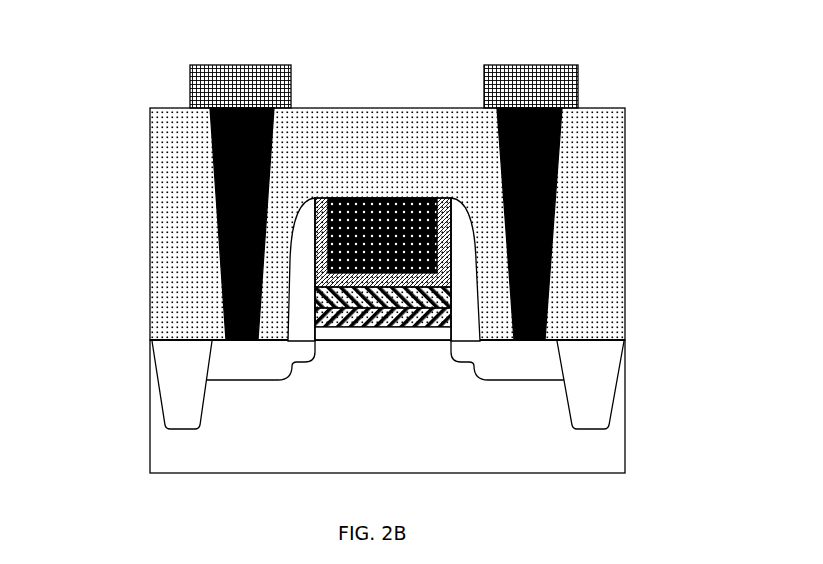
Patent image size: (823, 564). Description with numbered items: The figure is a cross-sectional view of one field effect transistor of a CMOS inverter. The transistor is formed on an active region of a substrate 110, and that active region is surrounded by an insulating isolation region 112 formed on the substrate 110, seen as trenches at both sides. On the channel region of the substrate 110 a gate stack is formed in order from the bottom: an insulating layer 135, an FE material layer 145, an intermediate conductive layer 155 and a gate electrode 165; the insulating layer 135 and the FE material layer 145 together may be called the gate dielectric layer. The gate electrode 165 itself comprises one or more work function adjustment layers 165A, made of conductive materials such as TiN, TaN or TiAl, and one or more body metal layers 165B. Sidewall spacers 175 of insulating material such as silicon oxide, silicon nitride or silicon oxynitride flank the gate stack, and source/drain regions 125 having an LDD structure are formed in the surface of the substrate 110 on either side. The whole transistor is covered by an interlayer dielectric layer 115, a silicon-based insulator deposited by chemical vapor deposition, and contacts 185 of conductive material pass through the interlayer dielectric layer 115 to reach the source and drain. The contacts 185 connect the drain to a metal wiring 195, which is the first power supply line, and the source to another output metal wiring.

The substrate 110 is at (220, 450).
The insulating isolation region 112 is at (180, 409).
The interlayer dielectric (ILD) layer 115 is at (392, 138).
The source/drain regions 125 is at (263, 358).
The insulating layer 135 is at (438, 335).
The FE material layer 145 is at (447, 303).
The intermediate conductive layer 155 is at (315, 295).
The gate electrode 165 is at (407, 184).
The work function adjustment layer 165A is at (425, 238).
The body metal layer 165B is at (445, 203).
The sidewall spacers 175 is at (300, 280).
The contacts 185 is at (212, 157).
The metal wiring 195 is at (255, 82).